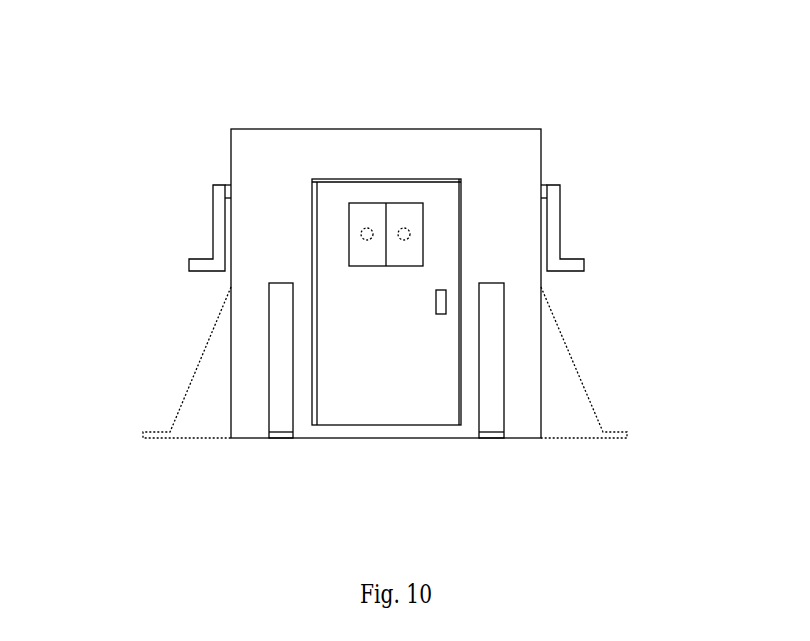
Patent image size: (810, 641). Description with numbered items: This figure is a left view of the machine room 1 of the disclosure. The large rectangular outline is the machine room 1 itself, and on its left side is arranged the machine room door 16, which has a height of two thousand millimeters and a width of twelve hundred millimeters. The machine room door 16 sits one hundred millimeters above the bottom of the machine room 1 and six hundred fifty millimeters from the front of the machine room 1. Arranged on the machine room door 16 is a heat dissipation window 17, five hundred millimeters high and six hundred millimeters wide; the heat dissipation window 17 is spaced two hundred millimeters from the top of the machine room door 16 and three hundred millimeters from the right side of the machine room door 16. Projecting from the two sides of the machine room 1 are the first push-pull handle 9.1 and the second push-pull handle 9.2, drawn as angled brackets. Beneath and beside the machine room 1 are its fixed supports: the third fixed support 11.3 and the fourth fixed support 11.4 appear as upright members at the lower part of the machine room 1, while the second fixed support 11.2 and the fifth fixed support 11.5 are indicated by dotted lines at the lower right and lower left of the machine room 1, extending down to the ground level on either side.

The machine room 1 is at (382, 128).
The machine room door 16 is at (438, 198).
The heat dissipation window 17 is at (357, 202).
The first push-pull handle 9.1 is at (585, 258).
The second push-pull handle 9.2 is at (187, 258).
The second fixed support 11.2 is at (628, 430).
The third fixed support 11.3 is at (490, 438).
The fourth fixed support 11.4 is at (282, 438).
The fifth fixed support 11.5 is at (143, 432).